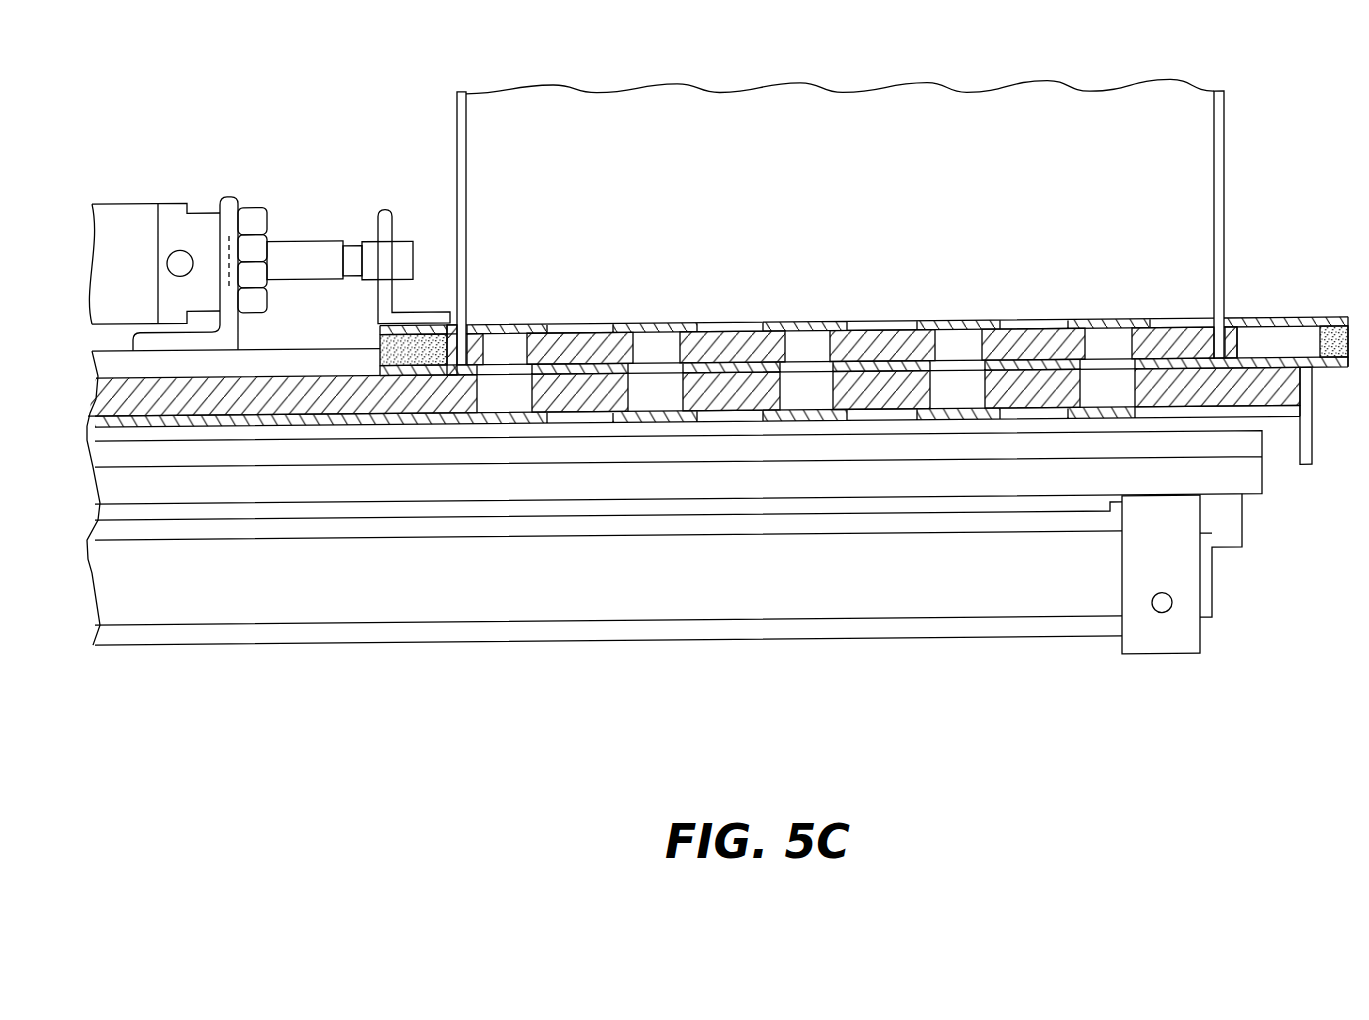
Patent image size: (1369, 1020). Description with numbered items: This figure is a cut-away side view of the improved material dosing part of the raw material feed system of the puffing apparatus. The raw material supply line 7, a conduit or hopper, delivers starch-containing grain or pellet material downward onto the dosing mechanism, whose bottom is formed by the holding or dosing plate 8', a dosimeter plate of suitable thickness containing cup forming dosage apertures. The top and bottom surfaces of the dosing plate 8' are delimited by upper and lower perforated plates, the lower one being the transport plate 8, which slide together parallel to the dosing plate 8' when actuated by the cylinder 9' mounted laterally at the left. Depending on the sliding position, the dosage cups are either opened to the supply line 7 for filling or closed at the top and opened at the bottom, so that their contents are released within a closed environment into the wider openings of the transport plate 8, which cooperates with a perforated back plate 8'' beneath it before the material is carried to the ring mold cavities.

The cylinder 9' is at (154, 223).
The raw material supply line 7 is at (457, 154).
The transport plate 8 is at (282, 484).
The holding or dosing plate 8' is at (840, 300).
The perforated back plate 8'' is at (697, 500).